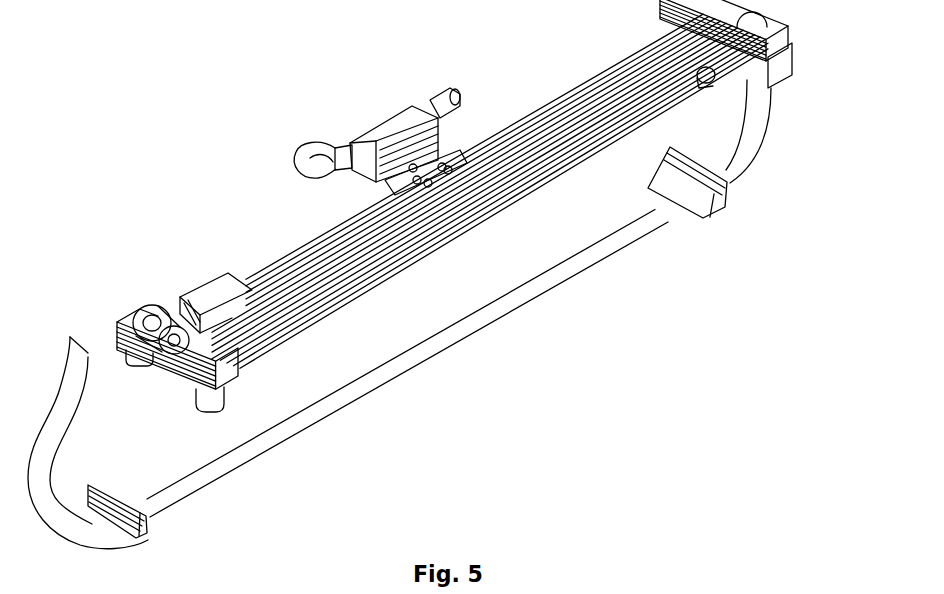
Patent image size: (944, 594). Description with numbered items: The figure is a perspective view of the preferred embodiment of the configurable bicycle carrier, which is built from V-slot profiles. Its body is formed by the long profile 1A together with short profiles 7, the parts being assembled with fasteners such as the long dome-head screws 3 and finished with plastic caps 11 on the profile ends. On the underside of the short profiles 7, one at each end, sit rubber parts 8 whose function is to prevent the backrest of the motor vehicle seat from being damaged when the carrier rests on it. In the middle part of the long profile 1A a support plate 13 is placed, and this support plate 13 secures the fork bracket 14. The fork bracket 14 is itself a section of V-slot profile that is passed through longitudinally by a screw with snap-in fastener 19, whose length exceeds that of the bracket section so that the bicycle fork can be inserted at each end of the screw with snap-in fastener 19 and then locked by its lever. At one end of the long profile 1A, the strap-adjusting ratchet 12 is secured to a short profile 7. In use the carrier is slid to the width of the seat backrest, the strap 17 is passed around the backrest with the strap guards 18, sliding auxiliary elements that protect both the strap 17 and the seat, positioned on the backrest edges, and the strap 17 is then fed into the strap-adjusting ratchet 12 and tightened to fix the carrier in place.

The long profile 1A is at (263, 268).
The long dome-head screw 3 is at (713, 88).
The short profile 7 is at (192, 379).
The rubber part 8 is at (200, 409).
The plastic cap 11 is at (234, 383).
The strap-adjusting ratchet 12 is at (207, 291).
The support plate 13 is at (440, 147).
The fork bracket 14 is at (373, 123).
The strap 17 is at (58, 459).
The strap guard 18 is at (312, 323).
The screw with snap-in fastener 19 is at (315, 148).